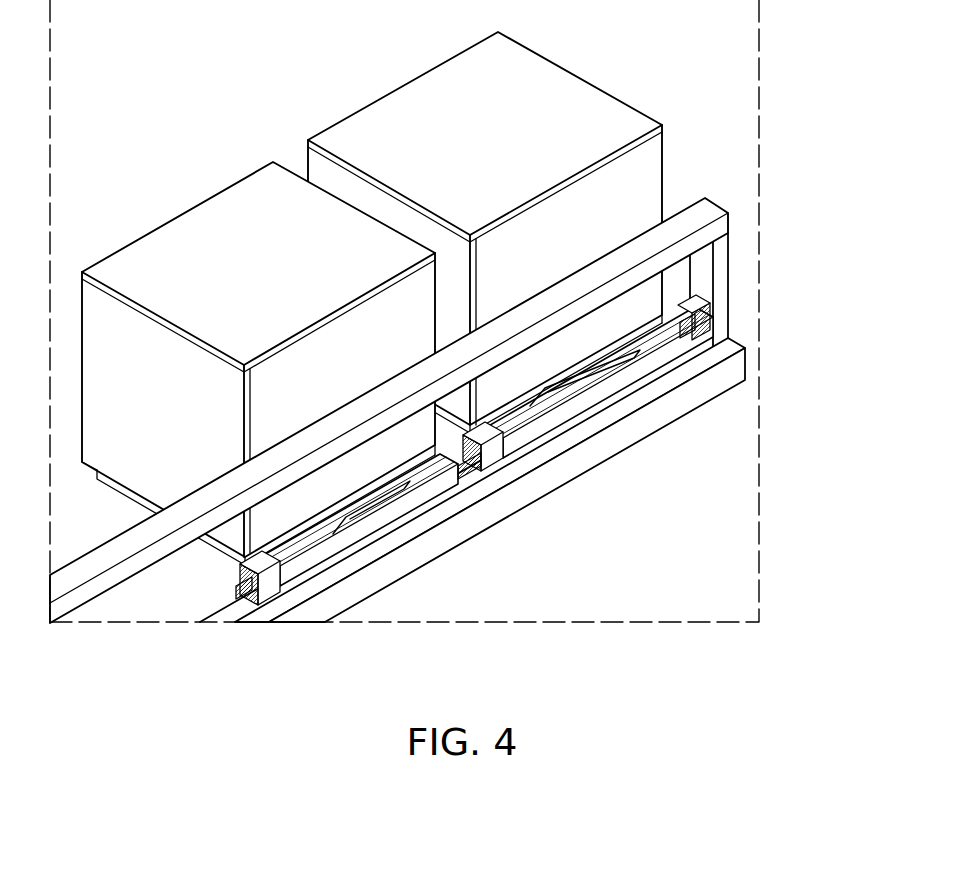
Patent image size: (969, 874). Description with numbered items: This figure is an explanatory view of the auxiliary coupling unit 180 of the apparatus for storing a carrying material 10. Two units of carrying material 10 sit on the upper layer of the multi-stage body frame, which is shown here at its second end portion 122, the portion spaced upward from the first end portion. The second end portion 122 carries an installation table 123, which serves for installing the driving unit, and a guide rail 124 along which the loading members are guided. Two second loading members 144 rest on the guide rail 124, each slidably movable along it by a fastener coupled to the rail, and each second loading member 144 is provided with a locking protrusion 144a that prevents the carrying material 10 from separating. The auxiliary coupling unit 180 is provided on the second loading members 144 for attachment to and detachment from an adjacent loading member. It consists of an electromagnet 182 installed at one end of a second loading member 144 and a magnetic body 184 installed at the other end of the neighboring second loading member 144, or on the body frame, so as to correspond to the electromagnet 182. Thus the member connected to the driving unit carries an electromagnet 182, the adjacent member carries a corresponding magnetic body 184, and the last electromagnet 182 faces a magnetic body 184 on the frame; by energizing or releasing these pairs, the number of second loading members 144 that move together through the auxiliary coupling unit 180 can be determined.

The carrying material 10 is at (360, 134).
The second end portion 122 is at (722, 377).
The installation table 123 is at (683, 222).
The guide rail 124 is at (220, 622).
The second loading member 144 is at (350, 543).
The locking protrusion 144a is at (417, 537).
The auxiliary coupling unit 180 is at (472, 589).
The electromagnet 182 is at (477, 470).
The magnetic body 184 is at (263, 585).